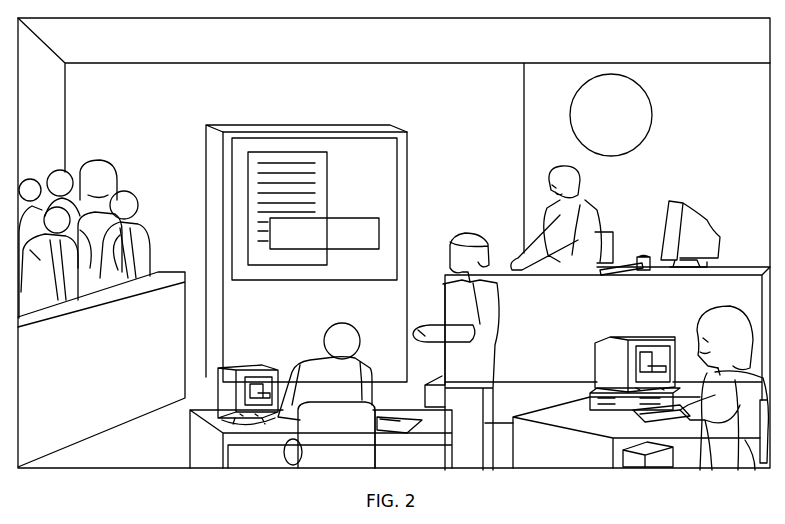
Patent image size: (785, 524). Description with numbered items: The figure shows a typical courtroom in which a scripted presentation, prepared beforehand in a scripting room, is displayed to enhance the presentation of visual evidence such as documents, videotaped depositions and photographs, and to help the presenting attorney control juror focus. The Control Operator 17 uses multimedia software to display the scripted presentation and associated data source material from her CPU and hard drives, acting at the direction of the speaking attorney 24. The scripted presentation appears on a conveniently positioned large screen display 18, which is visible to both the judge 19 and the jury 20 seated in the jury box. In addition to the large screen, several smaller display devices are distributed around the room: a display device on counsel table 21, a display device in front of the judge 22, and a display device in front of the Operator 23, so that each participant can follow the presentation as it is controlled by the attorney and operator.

The Control Operator 17 is at (712, 310).
The large screen display 18 is at (237, 160).
The judge 19 is at (583, 170).
The jury 20 is at (99, 157).
The display device on counsel table 21 is at (262, 378).
The display device in front of the judge 22 is at (697, 208).
The display device in front of the Operator 23 is at (623, 340).
The speaking attorney 24 is at (470, 230).